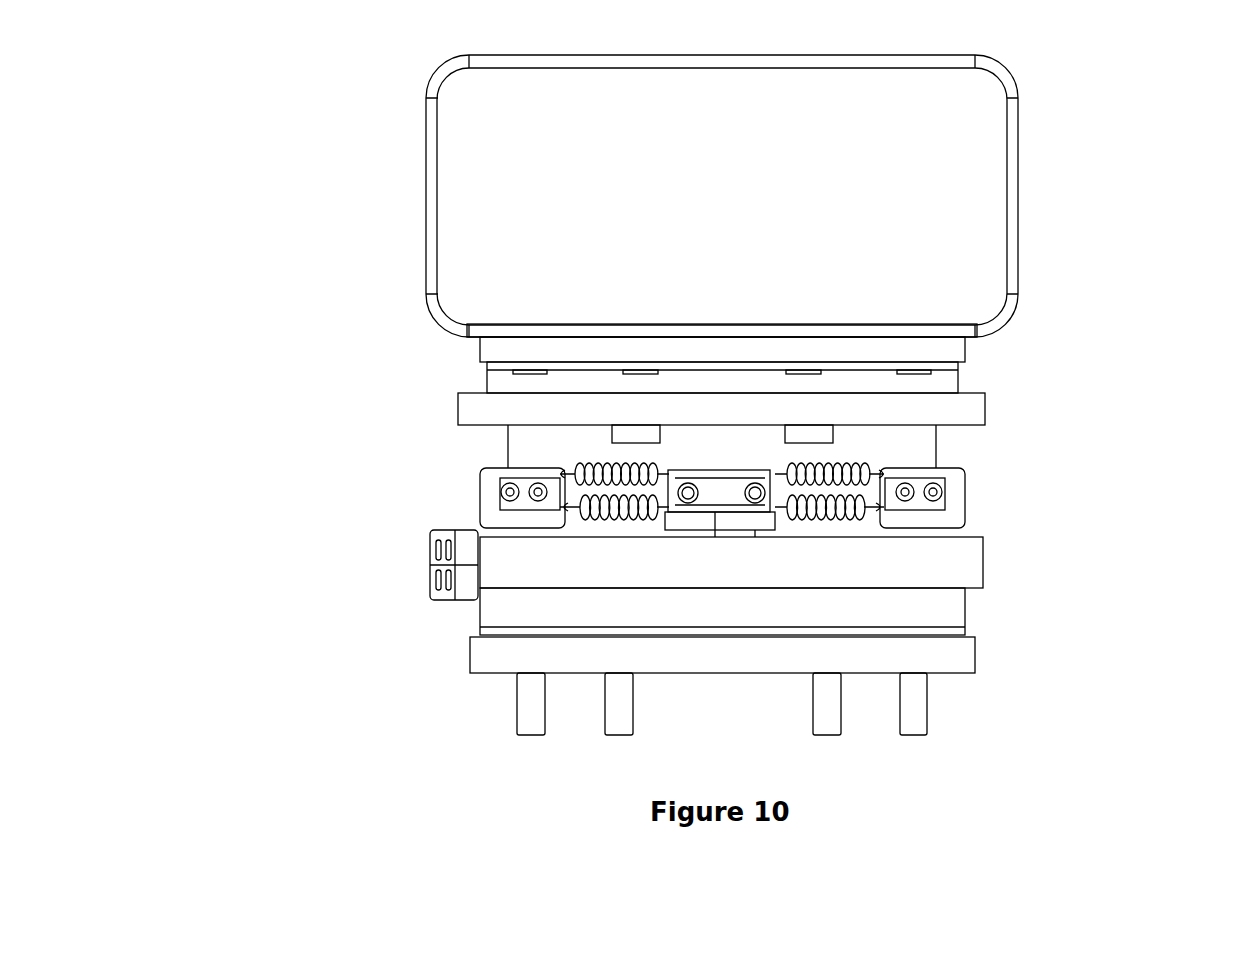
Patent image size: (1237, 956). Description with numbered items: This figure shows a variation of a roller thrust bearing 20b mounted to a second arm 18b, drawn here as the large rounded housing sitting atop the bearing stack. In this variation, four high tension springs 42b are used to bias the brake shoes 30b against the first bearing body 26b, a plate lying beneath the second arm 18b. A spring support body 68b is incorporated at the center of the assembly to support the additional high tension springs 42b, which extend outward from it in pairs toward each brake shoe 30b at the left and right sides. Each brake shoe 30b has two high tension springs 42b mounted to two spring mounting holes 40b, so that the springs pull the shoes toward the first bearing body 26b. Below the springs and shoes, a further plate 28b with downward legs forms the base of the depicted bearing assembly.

The second arm 18b is at (977, 196).
The roller thrust bearing 20b is at (330, 420).
The first bearing body 26b is at (975, 411).
The base plate 28b is at (935, 652).
The brake shoe 30b is at (478, 503).
The spring mounting hole 40b is at (490, 466).
The high tension spring 42b is at (578, 465).
The spring support body 68b is at (713, 517).